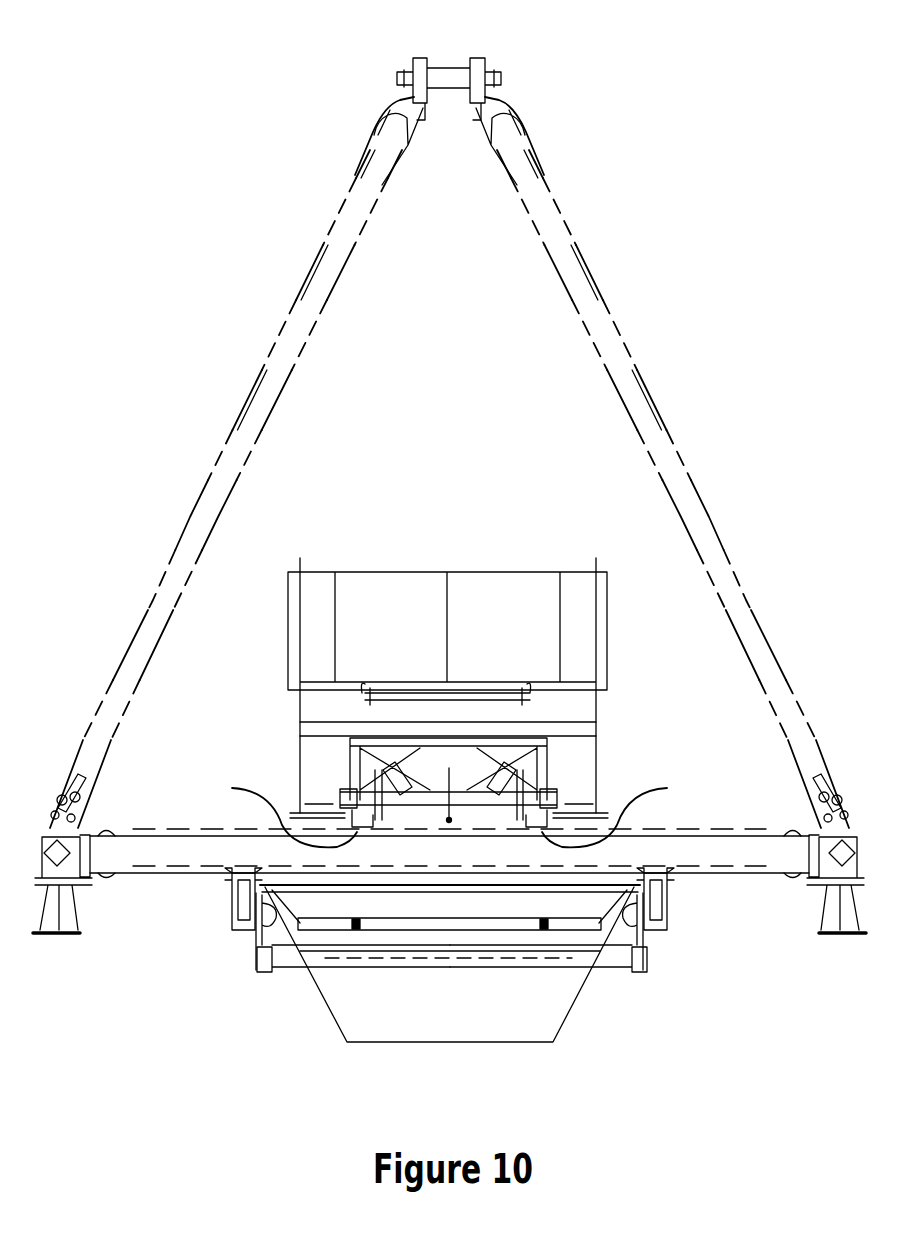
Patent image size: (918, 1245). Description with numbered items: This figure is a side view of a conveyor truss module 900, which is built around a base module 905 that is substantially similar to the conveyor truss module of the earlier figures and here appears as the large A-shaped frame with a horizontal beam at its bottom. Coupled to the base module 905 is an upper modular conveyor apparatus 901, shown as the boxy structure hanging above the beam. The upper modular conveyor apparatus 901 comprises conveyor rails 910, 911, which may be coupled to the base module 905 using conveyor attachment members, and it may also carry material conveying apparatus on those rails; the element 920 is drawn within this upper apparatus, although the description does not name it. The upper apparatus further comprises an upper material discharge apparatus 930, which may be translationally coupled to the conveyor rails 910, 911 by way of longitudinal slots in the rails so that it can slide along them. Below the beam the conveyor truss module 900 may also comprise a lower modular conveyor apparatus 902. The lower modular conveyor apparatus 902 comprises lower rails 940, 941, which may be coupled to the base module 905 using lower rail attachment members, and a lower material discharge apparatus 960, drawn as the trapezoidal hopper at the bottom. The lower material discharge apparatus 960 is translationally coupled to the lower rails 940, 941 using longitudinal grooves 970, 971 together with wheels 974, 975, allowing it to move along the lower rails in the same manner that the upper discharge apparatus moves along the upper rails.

The conveyor truss module 900 is at (283, 97).
The base module 905 is at (212, 424).
The upper modular conveyor apparatus 901 is at (458, 503).
The upper material discharge apparatus 930 is at (270, 680).
The hub frame 920 is at (473, 758).
The conveyor rail 910 is at (268, 805).
The conveyor rail 911 is at (629, 805).
The longitudinal groove 970 is at (235, 880).
The longitudinal groove 971 is at (660, 880).
The lower rail 940 is at (235, 896).
The lower rail 941 is at (670, 896).
The wheel 974 is at (255, 952).
The wheel 975 is at (565, 948).
The lower modular conveyor apparatus 902 is at (236, 1006).
The lower material discharge apparatus 960 is at (458, 1064).